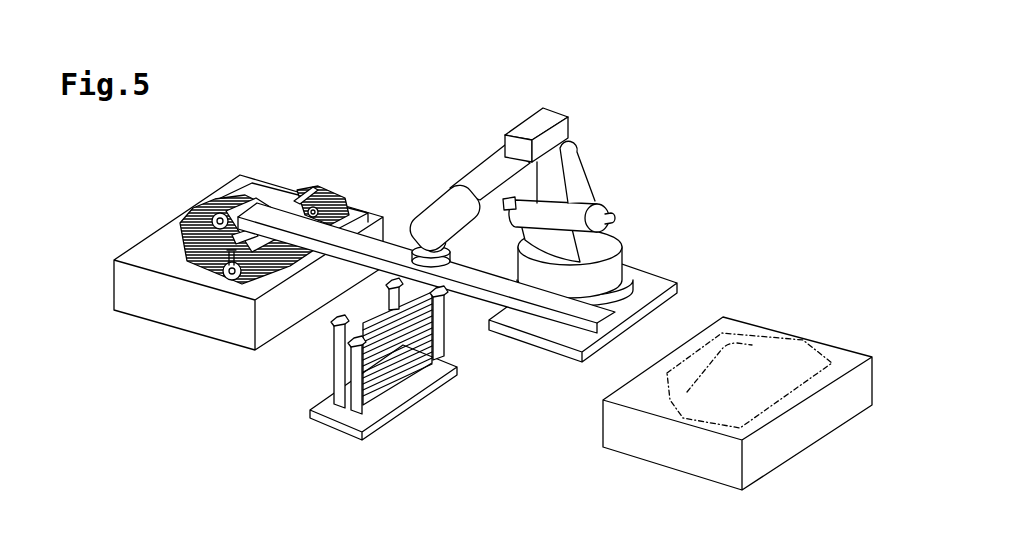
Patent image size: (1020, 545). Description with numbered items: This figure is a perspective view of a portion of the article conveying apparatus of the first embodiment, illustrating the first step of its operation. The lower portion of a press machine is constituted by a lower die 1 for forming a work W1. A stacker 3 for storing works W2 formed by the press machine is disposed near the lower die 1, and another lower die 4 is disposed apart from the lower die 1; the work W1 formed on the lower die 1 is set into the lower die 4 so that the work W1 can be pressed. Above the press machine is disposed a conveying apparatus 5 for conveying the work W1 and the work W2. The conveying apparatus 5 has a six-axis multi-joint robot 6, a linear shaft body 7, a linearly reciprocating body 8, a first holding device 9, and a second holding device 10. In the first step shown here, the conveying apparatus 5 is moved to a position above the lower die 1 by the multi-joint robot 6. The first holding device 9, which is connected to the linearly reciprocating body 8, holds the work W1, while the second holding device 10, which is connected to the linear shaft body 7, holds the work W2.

The lower die 1 is at (230, 333).
The stacker 3 is at (397, 403).
The lower die 4 is at (845, 356).
The conveying apparatus 5 is at (563, 197).
The six-axis multi-joint robot 6 is at (568, 128).
The linear shaft body 7 is at (473, 297).
The linearly reciprocating body 8 is at (282, 197).
The first holding device 9 is at (304, 204).
The second holding device 10 is at (217, 201).
The work W1 is at (343, 200).
The work W2 is at (182, 216).